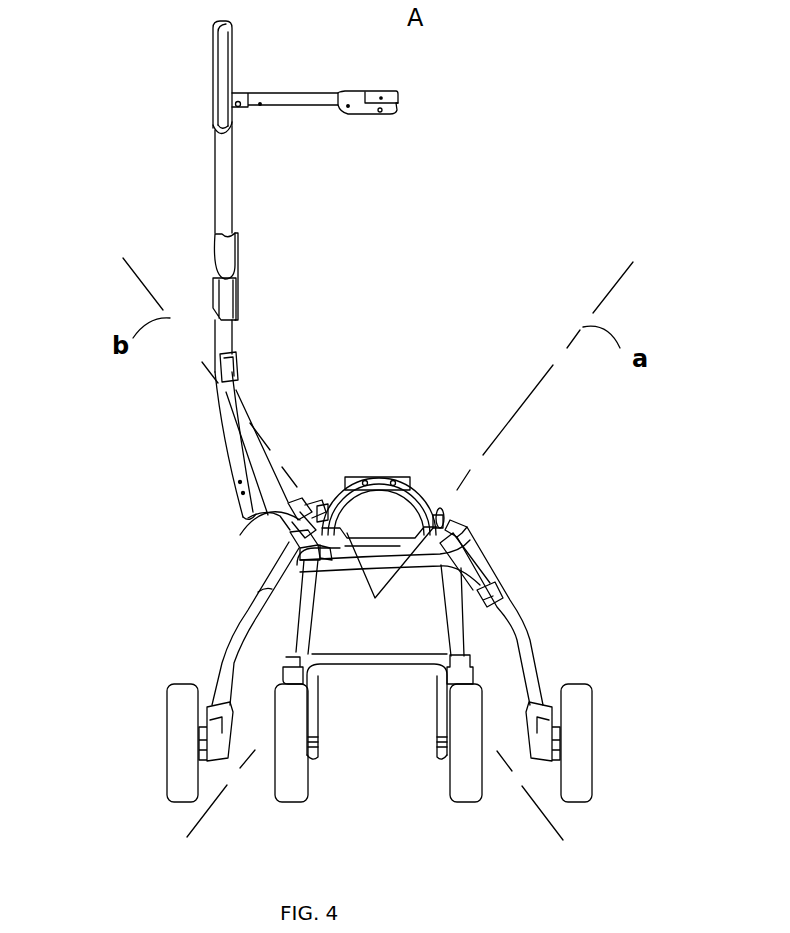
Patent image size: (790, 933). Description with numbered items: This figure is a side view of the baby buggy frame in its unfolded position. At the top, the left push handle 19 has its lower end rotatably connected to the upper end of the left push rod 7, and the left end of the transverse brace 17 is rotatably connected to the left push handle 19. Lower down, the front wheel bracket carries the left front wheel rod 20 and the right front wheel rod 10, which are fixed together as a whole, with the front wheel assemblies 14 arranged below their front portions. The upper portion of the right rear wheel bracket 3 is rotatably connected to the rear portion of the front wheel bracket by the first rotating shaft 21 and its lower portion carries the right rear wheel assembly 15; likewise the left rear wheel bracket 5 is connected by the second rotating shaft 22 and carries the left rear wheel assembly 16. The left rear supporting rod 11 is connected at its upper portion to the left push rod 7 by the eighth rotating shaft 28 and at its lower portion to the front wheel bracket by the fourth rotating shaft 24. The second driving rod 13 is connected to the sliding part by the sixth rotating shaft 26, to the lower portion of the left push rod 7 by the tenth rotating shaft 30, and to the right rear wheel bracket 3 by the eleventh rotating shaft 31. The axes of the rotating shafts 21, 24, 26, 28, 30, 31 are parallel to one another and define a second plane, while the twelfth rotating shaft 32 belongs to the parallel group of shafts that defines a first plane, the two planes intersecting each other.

The right rear wheel bracket 3 is at (520, 622).
The left rear wheel bracket 5 is at (232, 655).
The left push rod 7 is at (217, 336).
The right front wheel rod 10 is at (458, 604).
The left rear supporting rod 11 is at (256, 457).
The second driving rod 13 is at (466, 580).
The front wheel assemblies 14 is at (311, 763).
The right rear wheel assembly 15 is at (595, 735).
The left rear wheel assembly 16 is at (162, 740).
The transverse brace 17 is at (364, 126).
The left push handle 19 is at (225, 44).
The left front wheel rod 20 is at (303, 637).
The first rotating shaft 21 is at (456, 550).
The second rotating shaft 22 is at (292, 529).
The fourth rotating shaft 24 is at (303, 497).
The sixth rotating shaft 26 is at (333, 549).
The eighth rotating shaft 28 is at (240, 378).
The tenth rotating shaft 30 is at (262, 521).
The eleventh rotating shaft 31 is at (497, 603).
The twelfth rotating shaft 32 is at (268, 592).